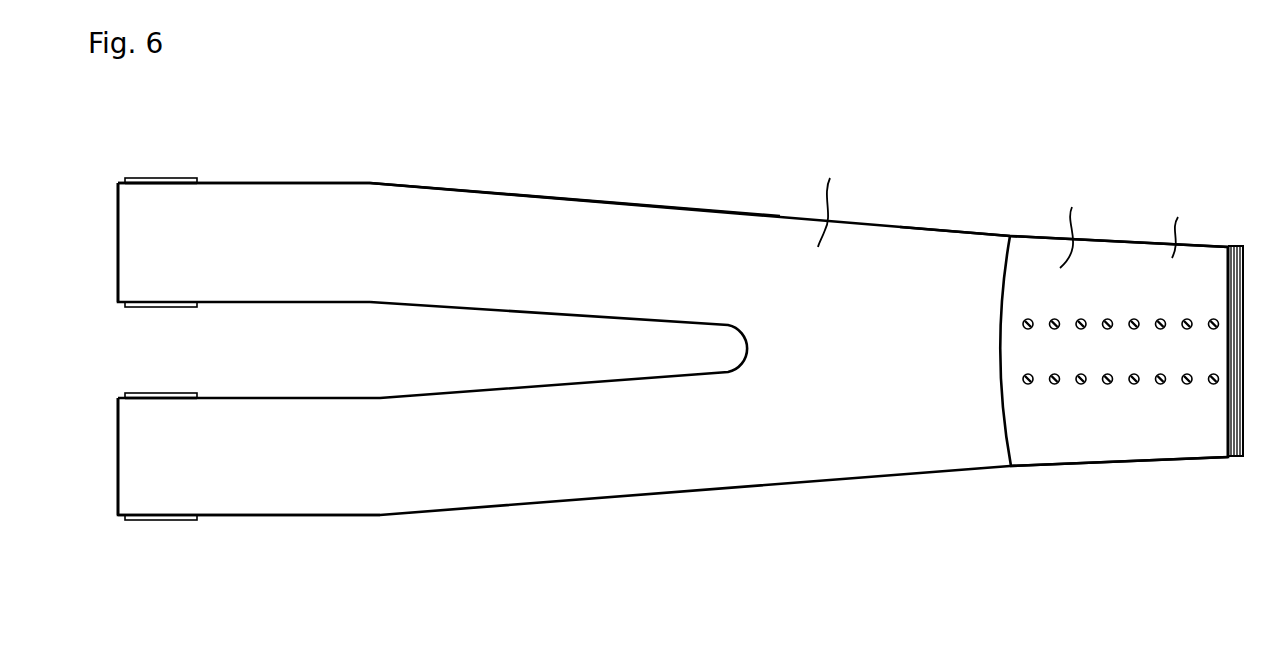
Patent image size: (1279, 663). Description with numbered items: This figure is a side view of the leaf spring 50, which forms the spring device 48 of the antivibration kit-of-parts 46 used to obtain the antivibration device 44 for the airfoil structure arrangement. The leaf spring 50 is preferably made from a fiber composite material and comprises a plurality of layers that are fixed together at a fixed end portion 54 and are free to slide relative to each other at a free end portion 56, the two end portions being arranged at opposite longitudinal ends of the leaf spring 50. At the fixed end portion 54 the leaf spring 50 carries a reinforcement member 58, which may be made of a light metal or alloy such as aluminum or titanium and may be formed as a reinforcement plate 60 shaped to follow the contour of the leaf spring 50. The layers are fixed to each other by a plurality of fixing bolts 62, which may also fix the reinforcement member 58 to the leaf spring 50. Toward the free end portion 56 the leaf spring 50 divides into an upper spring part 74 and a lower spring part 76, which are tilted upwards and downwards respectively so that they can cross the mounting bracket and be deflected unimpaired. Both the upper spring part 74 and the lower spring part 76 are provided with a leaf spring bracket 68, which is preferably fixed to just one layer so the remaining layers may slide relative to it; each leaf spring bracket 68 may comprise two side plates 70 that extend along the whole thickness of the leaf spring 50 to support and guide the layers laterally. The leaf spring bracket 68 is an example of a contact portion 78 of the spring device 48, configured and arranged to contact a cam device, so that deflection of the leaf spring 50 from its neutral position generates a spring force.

The antivibration device 44 is at (896, 210).
The antivibration kit-of-parts 46 is at (947, 222).
The spring device 48 is at (764, 211).
The leaf spring 50 is at (832, 199).
The fixed end portion 54 is at (1133, 228).
The free end portion 56 is at (215, 232).
The reinforcement member 58 is at (1076, 227).
The reinforcement plate 60 is at (1205, 325).
The fixing bolts 62 is at (1130, 387).
The leaf spring bracket 68 is at (176, 190).
The side plates 70 is at (180, 177).
The upper spring part 74 is at (336, 219).
The lower spring part 76 is at (379, 436).
The contact portion 78 is at (171, 393).